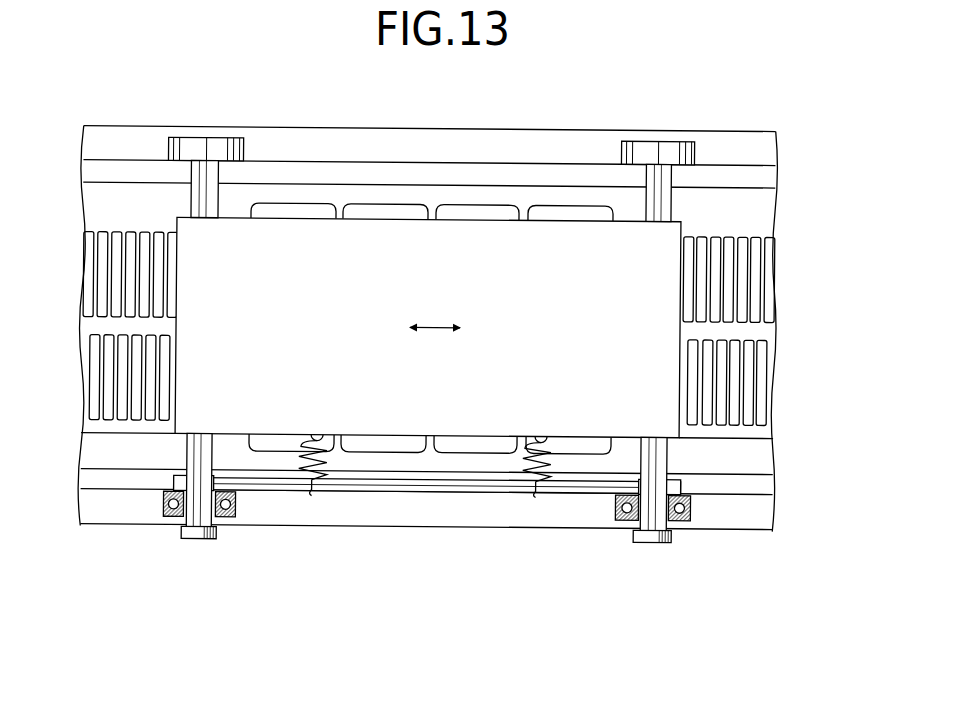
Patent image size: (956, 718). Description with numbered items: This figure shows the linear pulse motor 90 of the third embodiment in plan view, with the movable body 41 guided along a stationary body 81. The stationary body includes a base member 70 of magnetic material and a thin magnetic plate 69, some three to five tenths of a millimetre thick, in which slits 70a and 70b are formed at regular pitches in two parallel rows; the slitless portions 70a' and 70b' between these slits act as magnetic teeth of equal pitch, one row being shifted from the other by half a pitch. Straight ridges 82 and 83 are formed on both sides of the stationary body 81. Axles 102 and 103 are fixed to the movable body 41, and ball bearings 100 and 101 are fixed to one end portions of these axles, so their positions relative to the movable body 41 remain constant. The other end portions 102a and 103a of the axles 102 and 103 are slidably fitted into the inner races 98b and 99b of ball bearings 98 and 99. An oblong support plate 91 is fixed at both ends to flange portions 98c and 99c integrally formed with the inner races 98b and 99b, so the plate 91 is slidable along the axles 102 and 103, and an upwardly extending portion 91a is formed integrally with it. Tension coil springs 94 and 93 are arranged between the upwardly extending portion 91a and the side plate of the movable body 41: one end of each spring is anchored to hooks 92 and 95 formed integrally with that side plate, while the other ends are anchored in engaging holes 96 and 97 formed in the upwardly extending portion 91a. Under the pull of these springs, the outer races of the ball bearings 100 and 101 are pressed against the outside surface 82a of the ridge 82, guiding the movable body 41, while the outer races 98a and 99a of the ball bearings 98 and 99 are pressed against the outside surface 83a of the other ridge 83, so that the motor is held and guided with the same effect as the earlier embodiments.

The linear pulse motor 90 is at (373, 112).
The straight ridge 82 is at (105, 165).
The outside surface of ridge 82a is at (140, 160).
The ball bearing 100 is at (212, 145).
The ball bearing 101 is at (645, 152).
The axle 102 is at (197, 202).
The axle 103 is at (662, 200).
The movable body 41 is at (350, 236).
The base member 70 is at (720, 150).
The slits 70a is at (754, 266).
The slitless portions 70a' is at (779, 279).
The slits 70b is at (756, 374).
The slitless portions 70b' is at (785, 382).
The magnetic plate 69 is at (742, 455).
The flange portion 98c is at (220, 482).
The flange portion 99c is at (640, 481).
The hook 92 is at (322, 440).
The tension coil spring 93 is at (538, 442).
The tension coil spring 94 is at (293, 455).
The hook 95 is at (562, 460).
The engaging hole 96 is at (304, 493).
The engaging hole 97 is at (537, 493).
The oblong support plate 91 is at (393, 486).
The upwardly extending portion 91a is at (427, 486).
The ball bearing 98 is at (220, 534).
The outer race 98a is at (170, 520).
The inner race 98b is at (228, 520).
The ball bearing 99 is at (674, 544).
The outer race 99a is at (627, 521).
The inner race 99b is at (676, 521).
The straight ridge 83 is at (157, 494).
The outside surface of ridge 83a is at (145, 488).
The stationary body 81 is at (470, 528).
The other end portion of axle 102a is at (207, 541).
The other end portion of axle 103a is at (663, 541).